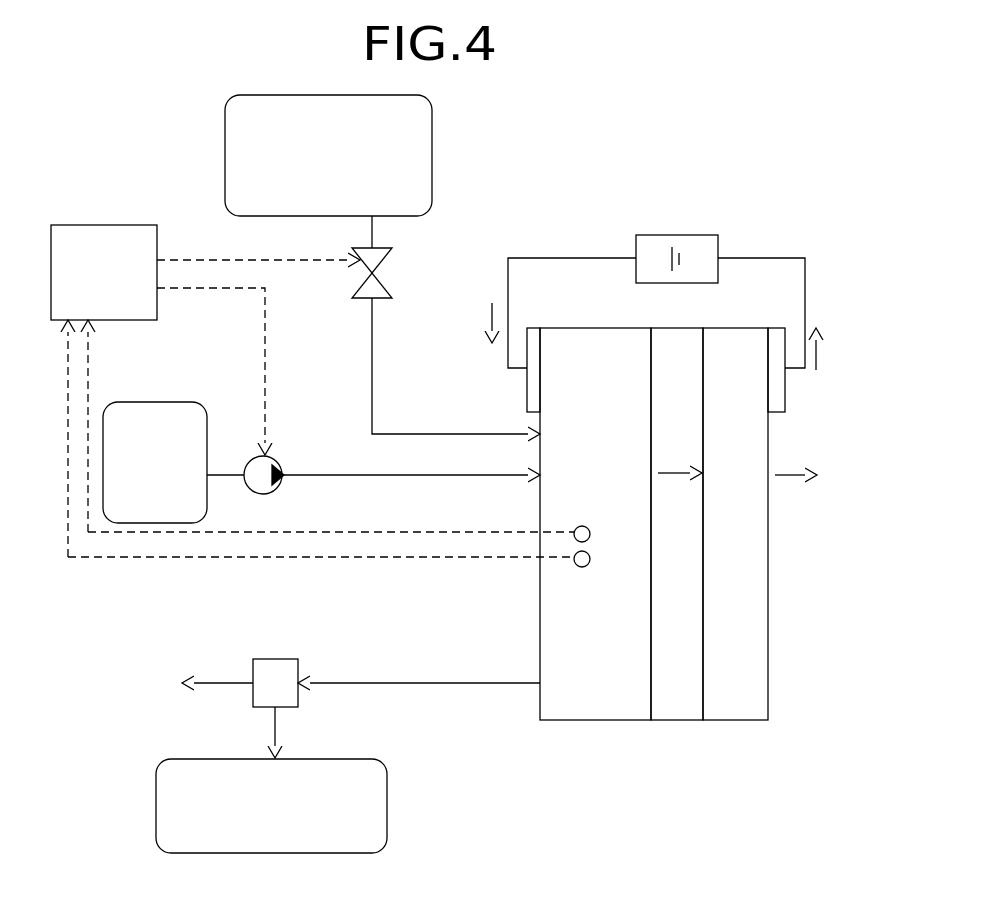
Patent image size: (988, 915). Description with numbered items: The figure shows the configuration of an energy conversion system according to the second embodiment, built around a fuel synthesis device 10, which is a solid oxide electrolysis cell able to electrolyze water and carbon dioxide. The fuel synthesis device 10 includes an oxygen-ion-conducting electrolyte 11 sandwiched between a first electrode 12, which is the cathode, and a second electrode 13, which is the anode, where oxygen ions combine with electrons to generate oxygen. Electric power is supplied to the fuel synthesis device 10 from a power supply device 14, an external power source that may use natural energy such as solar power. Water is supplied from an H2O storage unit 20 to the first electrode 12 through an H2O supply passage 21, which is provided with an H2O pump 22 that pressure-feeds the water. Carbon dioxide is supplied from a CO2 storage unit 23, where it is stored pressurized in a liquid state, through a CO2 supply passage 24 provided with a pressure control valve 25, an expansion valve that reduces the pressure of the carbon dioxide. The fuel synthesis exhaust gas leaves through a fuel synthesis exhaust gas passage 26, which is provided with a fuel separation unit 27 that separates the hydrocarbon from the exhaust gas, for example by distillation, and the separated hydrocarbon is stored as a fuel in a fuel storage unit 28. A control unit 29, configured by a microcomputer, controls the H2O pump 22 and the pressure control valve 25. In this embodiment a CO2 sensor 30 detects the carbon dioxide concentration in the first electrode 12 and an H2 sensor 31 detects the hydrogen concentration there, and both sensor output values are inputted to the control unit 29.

The fuel synthesis device 10 is at (689, 505).
The electrolyte 11 is at (678, 722).
The first electrode 12 is at (590, 722).
The second electrode 13 is at (738, 722).
The power supply device 14 is at (678, 232).
The H2O storage unit 20 is at (156, 400).
The H2O supply passage 21 is at (368, 478).
The H2O pump 22 is at (281, 462).
The CO2 storage unit 23 is at (432, 140).
The CO2 supply passage 24 is at (398, 432).
The pressure control valve 25 is at (378, 284).
The fuel synthesis exhaust gas passage 26 is at (428, 686).
The fuel separation unit 27 is at (253, 664).
The fuel storage unit 28 is at (387, 810).
The control unit 29 is at (104, 225).
The CO2 sensor 30 is at (574, 530).
The H2 sensor 31 is at (574, 565).